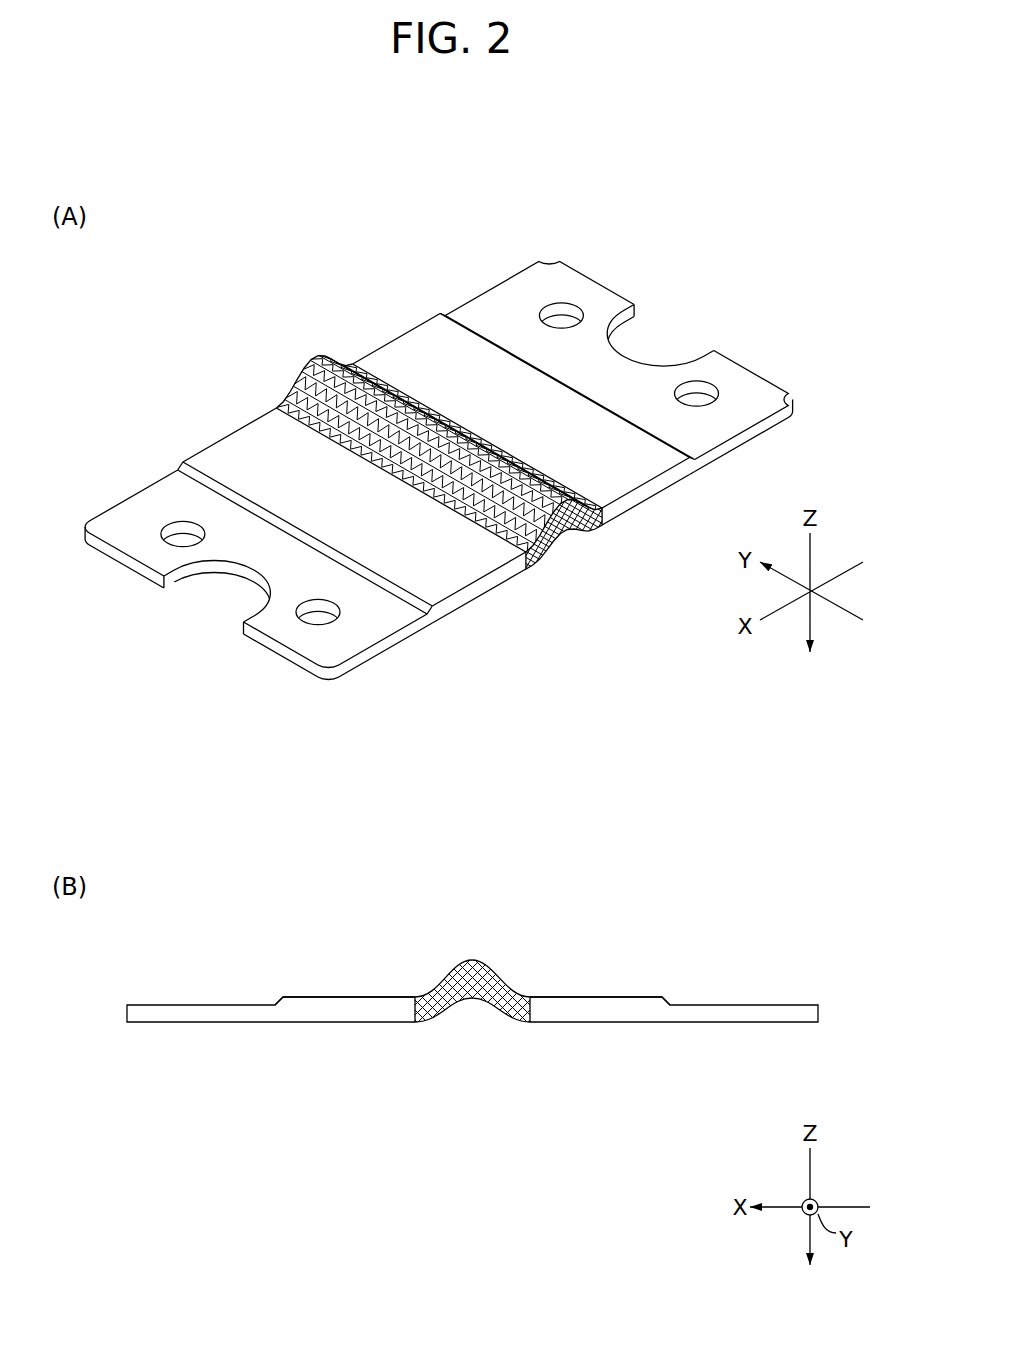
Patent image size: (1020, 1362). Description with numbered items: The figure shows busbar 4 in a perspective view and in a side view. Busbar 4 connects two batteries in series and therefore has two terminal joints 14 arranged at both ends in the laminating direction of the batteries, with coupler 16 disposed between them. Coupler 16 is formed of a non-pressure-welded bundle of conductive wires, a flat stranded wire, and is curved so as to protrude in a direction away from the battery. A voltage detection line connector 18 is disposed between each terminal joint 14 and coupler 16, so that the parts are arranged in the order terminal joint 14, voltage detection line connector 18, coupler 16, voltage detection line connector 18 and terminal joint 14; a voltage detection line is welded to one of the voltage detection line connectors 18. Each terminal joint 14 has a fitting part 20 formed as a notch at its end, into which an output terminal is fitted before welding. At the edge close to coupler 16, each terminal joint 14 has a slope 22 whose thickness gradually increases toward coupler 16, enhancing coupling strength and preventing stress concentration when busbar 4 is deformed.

The busbar 4 is at (487, 740).
The terminal joint 14 is at (497, 283).
The coupler 16 is at (324, 357).
The voltage detection line connector 18 is at (405, 334).
The fitting part 20 is at (620, 338).
The slope 22 is at (440, 313).